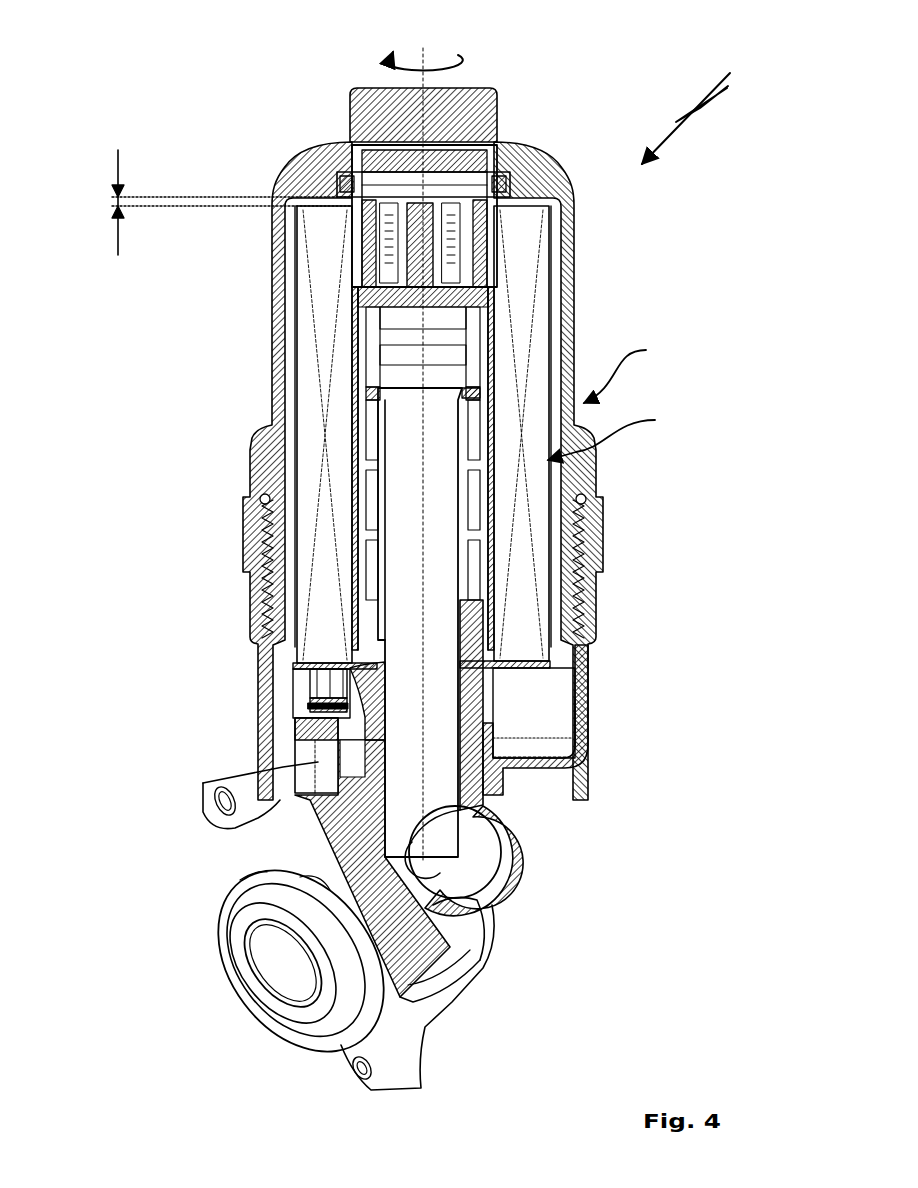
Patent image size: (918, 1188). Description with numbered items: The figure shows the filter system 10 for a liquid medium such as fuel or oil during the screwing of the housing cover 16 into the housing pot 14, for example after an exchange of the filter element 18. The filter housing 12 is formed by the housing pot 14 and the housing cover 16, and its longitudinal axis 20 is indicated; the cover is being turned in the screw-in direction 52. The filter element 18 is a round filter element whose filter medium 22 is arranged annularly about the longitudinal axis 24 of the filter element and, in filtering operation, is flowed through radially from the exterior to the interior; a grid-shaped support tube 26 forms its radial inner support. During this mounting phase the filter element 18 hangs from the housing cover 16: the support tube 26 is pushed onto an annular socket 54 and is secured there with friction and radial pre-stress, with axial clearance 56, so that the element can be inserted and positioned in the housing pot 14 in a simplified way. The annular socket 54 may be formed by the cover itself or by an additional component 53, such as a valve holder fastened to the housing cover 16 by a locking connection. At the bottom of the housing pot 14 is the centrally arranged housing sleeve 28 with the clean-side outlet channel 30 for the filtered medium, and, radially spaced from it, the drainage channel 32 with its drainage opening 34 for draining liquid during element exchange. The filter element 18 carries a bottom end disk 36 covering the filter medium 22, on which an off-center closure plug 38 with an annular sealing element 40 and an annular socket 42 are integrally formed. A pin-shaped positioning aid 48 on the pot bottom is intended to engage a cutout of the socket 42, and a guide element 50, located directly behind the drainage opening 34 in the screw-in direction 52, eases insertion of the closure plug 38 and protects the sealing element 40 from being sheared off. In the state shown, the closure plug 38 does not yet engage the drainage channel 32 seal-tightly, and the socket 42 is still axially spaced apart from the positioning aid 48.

The filter system 10 is at (701, 108).
The filter housing 12 is at (628, 371).
The housing pot 14 is at (578, 667).
The housing cover 16 is at (569, 292).
The filter element 18 is at (614, 434).
The longitudinal axis 20 is at (446, 100).
The longitudinal axis 24 is at (430, 76).
The filter medium 22 is at (306, 288).
The support tube 26 is at (496, 340).
The housing sleeve 28 is at (437, 782).
The outlet channel 30 is at (487, 818).
The drainage channel 32 is at (313, 810).
The drainage opening 34 is at (288, 735).
The bottom end disk 36 is at (503, 698).
The closure plug 38 is at (313, 690).
The sealing element 40 is at (330, 708).
The socket 42 is at (578, 722).
The positioning aid 48 is at (493, 738).
The guide element 50 is at (310, 703).
The screw-in direction 52 is at (440, 50).
The additional component 53 is at (510, 190).
The annular socket 54 is at (487, 212).
The axial clearance 56 is at (118, 160).